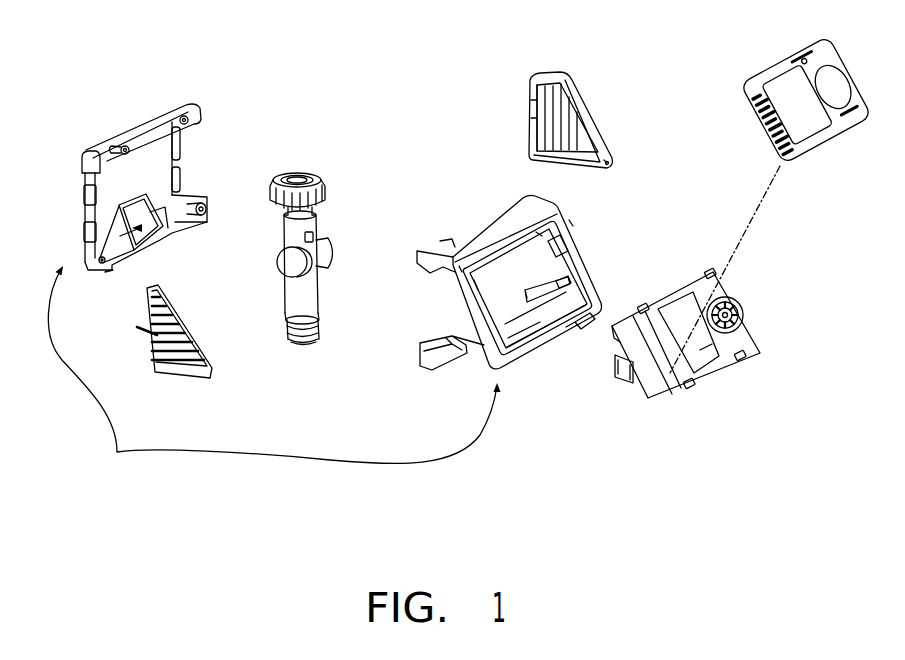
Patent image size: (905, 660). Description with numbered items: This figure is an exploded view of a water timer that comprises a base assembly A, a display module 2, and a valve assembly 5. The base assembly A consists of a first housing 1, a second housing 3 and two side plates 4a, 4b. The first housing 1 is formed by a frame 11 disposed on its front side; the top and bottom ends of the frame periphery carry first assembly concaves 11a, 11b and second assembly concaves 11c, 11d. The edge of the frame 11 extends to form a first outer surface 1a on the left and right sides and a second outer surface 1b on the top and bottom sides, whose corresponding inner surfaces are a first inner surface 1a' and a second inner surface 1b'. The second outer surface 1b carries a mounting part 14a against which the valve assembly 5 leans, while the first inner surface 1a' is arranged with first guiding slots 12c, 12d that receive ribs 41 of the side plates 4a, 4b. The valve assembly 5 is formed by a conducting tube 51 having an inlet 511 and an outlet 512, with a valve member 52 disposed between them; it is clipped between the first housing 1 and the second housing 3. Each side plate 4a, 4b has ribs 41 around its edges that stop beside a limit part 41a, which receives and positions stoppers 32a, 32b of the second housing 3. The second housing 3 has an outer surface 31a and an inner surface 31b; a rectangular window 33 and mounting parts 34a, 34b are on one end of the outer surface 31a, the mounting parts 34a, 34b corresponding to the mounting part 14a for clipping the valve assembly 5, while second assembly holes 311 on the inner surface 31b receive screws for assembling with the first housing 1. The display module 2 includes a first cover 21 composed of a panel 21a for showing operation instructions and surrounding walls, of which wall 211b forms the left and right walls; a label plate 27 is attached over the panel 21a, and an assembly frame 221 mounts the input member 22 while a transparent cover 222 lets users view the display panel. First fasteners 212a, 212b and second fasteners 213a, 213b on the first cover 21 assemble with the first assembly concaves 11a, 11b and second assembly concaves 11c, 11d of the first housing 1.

The first housing 1 is at (514, 269).
The first outer surface 1a is at (504, 314).
The first inner surface 1a' is at (551, 261).
The second outer surface 1b is at (506, 205).
The second inner surface 1b' is at (529, 311).
The frame 11 is at (536, 269).
The first assembly concave 11a is at (480, 258).
The first assembly concave 11b is at (545, 205).
The second assembly concave 11c is at (528, 334).
The second assembly concave 11d is at (576, 302).
The first guiding slot 12c is at (442, 342).
The first guiding slot 12d is at (533, 294).
The mounting part 14a is at (446, 250).
The display module 2 is at (738, 247).
The first cover 21 is at (714, 344).
The panel 21a is at (745, 345).
The wall 211b is at (645, 388).
The first fastener 212a is at (644, 304).
The first fastener 212b is at (710, 270).
The second fastener 213a is at (691, 389).
The second fastener 213b is at (743, 360).
The input member 22 is at (753, 287).
The assembly frame 221 is at (728, 305).
The transparent cover 222 is at (700, 362).
The label plate 27 is at (826, 140).
The second housing 3 is at (138, 159).
The outer surface 31a is at (143, 117).
The inner surface 31b is at (121, 183).
The second assembly hole 311 is at (124, 146).
The stopper 32a is at (85, 228).
The stopper 32b is at (180, 179).
The rectangular window 33 is at (170, 230).
The mounting part 34a is at (88, 150).
The mounting part 34b is at (112, 266).
The side plate 4a is at (385, 226).
The side plate 4b is at (583, 120).
The rib 41 is at (152, 288).
The limit part 41a is at (531, 140).
The valve assembly 5 is at (326, 220).
The conducting tube 51 is at (326, 239).
The inlet 511 is at (305, 175).
The outlet 512 is at (308, 345).
The valve member 52 is at (288, 266).
The base assembly A is at (274, 372).